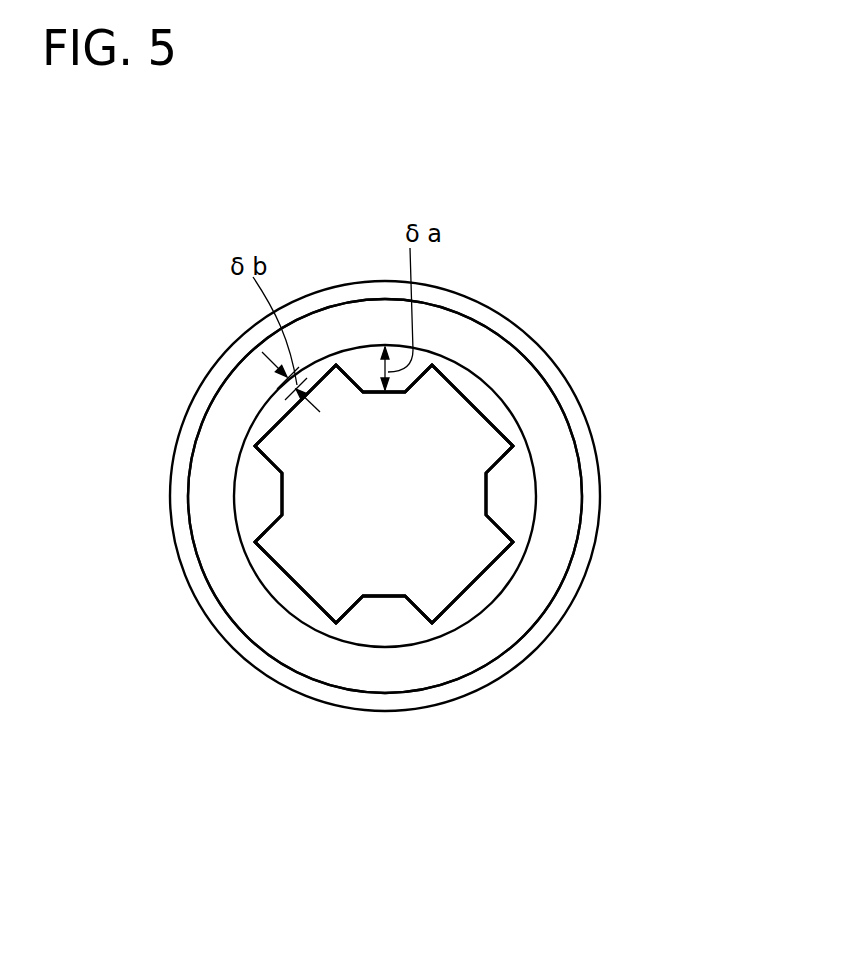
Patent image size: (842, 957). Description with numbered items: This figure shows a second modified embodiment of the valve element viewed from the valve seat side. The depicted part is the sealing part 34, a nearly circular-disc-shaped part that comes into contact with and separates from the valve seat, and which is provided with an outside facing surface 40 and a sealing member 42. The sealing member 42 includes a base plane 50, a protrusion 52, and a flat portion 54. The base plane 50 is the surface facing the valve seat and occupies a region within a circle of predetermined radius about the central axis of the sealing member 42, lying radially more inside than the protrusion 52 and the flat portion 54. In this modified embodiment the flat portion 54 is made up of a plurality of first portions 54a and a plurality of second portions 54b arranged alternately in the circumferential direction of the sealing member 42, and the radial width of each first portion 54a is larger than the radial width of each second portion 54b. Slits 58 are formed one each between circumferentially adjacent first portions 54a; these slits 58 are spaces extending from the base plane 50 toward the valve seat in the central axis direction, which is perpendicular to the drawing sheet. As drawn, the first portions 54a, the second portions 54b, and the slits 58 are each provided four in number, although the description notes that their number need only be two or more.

The sealing part 34 is at (577, 385).
The outside facing surface 40 is at (587, 522).
The sealing member 42 is at (532, 588).
The base plane 50 is at (365, 508).
The protrusion 52 is at (548, 560).
The flat portion 54 is at (384, 494).
The first portion 54a is at (363, 373).
The second portion 54b is at (267, 412).
The slit 58 is at (285, 377).